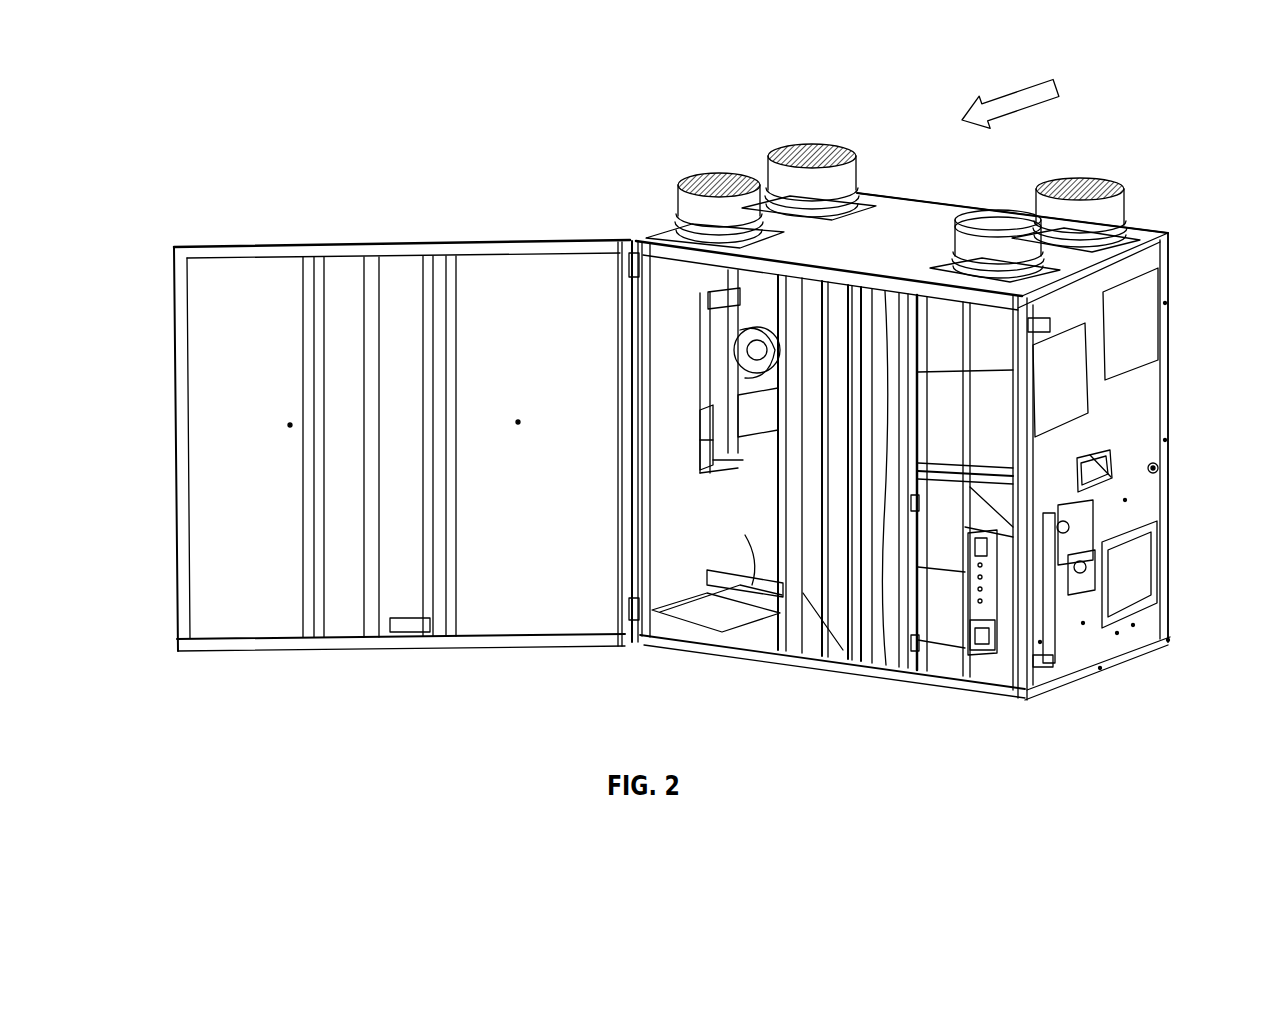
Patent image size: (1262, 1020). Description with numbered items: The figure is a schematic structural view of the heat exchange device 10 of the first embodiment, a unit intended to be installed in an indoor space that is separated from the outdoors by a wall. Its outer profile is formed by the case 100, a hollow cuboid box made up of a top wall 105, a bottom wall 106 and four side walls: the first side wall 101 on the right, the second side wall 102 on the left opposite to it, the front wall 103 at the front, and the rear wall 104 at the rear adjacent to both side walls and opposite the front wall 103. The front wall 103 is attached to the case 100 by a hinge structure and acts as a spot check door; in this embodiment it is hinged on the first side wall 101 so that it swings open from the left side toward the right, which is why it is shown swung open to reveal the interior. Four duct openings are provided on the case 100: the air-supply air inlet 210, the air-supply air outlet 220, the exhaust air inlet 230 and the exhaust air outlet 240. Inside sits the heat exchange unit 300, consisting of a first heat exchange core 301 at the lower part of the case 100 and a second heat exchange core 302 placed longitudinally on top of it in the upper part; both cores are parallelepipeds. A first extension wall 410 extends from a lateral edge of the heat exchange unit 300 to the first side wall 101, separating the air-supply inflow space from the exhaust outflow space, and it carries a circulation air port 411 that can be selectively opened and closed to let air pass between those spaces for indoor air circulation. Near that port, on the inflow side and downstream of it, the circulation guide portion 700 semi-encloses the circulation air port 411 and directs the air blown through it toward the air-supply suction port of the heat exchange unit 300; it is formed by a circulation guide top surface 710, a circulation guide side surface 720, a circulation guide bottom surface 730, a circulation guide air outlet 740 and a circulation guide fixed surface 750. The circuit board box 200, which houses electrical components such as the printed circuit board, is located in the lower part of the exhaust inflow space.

The heat exchange device 10 is at (197, 124).
The case 100 is at (906, 192).
The first side wall 101 is at (637, 244).
The second side wall 102 is at (1152, 398).
The front wall 103 is at (496, 282).
The rear wall 104 is at (1171, 321).
The top wall 105 is at (933, 210).
The bottom wall 106 is at (702, 652).
The circuit board box 200 is at (1003, 553).
The air-supply air inlet 210 is at (698, 176).
The air-supply air outlet 220 is at (1090, 180).
The exhaust air inlet 230 is at (1000, 212).
The exhaust air outlet 240 is at (798, 145).
The heat exchange unit 300 is at (913, 722).
The first heat exchange core 301 is at (847, 660).
The second heat exchange core 302 is at (892, 666).
The first extension wall 410 is at (755, 582).
The circulation air port 411 is at (738, 368).
The circulation guide portion 700 is at (567, 704).
The circulation guide top surface 710 is at (555, 479).
The circulation guide side surface 720 is at (606, 507).
The circulation guide bottom surface 730 is at (635, 551).
The circulation guide air outlet 740 is at (649, 584).
The circulation guide fixed surface 750 is at (625, 543).